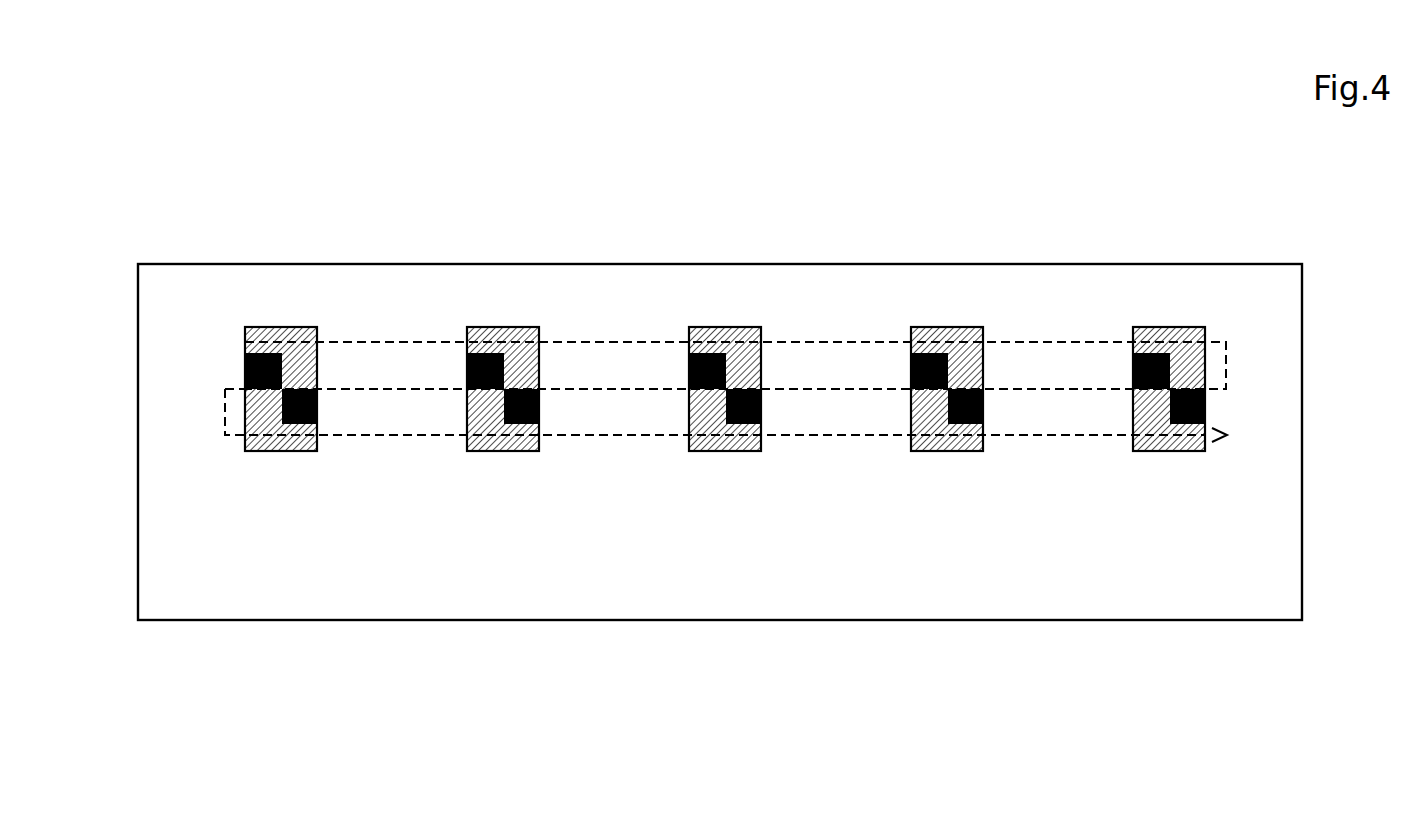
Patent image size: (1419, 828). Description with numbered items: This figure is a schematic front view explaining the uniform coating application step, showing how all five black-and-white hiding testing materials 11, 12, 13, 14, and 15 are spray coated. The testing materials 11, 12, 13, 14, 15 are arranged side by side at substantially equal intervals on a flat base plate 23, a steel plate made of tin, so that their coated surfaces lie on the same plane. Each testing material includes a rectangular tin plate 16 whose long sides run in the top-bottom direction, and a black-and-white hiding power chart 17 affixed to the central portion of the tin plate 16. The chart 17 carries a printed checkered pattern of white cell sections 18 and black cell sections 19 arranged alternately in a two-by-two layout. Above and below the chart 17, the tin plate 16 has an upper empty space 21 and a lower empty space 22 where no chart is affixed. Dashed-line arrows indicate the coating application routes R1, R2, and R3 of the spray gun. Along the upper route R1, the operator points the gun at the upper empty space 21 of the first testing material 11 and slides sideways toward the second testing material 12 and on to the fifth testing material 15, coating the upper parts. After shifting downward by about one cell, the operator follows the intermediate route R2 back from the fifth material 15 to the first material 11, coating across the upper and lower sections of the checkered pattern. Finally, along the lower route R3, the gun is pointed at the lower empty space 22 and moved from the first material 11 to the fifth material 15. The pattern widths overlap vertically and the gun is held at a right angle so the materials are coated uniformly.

The first black-and-white hiding testing material 11 is at (332, 488).
The second black-and-white hiding testing material 12 is at (507, 327).
The third black-and-white hiding testing material 13 is at (723, 327).
The fourth black-and-white hiding testing material 14 is at (945, 327).
The fifth black-and-white hiding testing material 15 is at (1170, 327).
The tin plate 16 is at (332, 551).
The black-and-white hiding power chart 17 is at (295, 582).
The white cell section 18 is at (258, 452).
The black cell section 19 is at (303, 452).
The upper empty space 21 is at (635, 282).
The lower empty space 22 is at (636, 545).
The base plate 23 is at (1272, 328).
The upper route R1 is at (1068, 342).
The intermediate route R2 is at (1001, 389).
The lower route R3 is at (1055, 435).